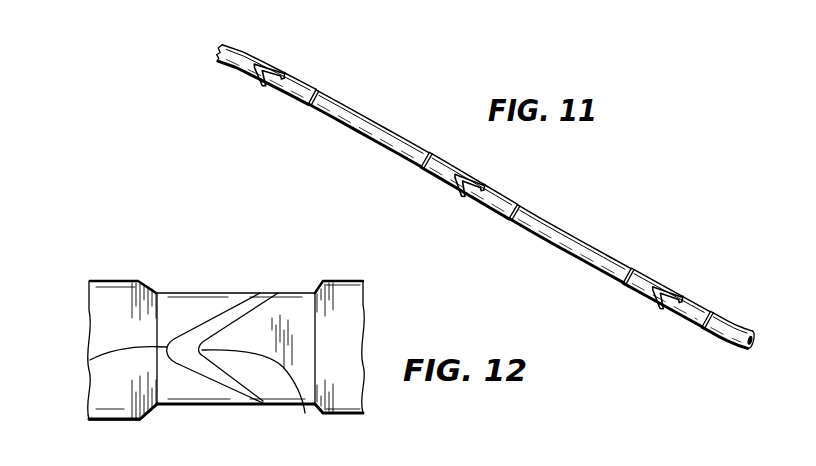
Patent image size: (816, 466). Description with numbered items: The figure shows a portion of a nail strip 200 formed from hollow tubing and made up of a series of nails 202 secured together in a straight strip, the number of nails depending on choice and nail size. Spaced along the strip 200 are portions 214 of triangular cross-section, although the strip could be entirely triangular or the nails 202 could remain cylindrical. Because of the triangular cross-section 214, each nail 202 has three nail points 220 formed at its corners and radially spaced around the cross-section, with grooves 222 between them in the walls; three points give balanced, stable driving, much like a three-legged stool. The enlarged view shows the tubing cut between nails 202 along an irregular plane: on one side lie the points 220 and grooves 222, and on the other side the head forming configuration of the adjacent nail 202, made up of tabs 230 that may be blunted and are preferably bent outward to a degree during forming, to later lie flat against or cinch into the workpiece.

In FIG. 11, the nail strip 200 is at (516, 179).
In FIG. 11, the nail 202 is at (238, 46).
In FIG. 12, the nail 202 is at (99, 313).
In FIG. 11, the portion of triangular cross-section 214 is at (312, 84).
In FIG. 12, the portion of triangular cross-section 214 is at (210, 293).
In FIG. 12, the nail point 220 is at (218, 300).
In FIG. 12, the groove 222 is at (90, 360).
In FIG. 12, the head forming tab 230 is at (266, 403).